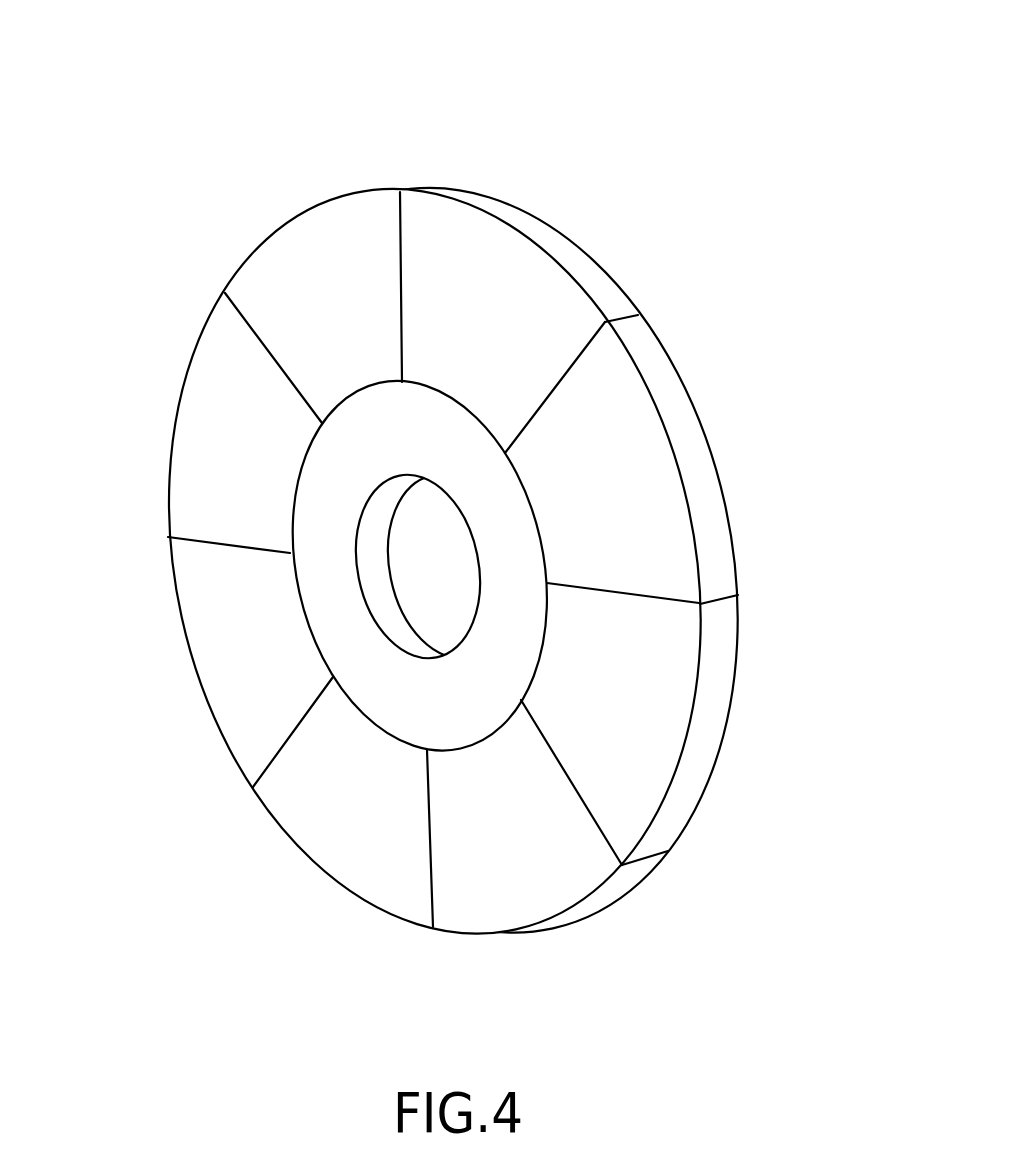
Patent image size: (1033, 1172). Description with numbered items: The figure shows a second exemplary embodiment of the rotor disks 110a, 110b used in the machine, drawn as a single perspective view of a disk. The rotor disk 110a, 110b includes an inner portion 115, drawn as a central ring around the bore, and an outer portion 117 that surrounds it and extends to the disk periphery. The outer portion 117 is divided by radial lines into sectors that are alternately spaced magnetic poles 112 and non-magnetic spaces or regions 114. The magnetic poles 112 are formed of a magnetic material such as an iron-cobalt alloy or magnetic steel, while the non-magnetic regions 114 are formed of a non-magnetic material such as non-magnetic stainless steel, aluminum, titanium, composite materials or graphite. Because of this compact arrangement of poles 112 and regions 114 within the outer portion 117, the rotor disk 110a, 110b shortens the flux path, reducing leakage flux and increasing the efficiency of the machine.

The rotor disk 110a is at (430, 496).
The rotor disk 110b is at (243, 200).
The magnetic poles 112 is at (335, 250).
The non-magnetic regions 114 is at (547, 333).
The inner portion 115 is at (348, 496).
The outer portion 117 is at (523, 228).